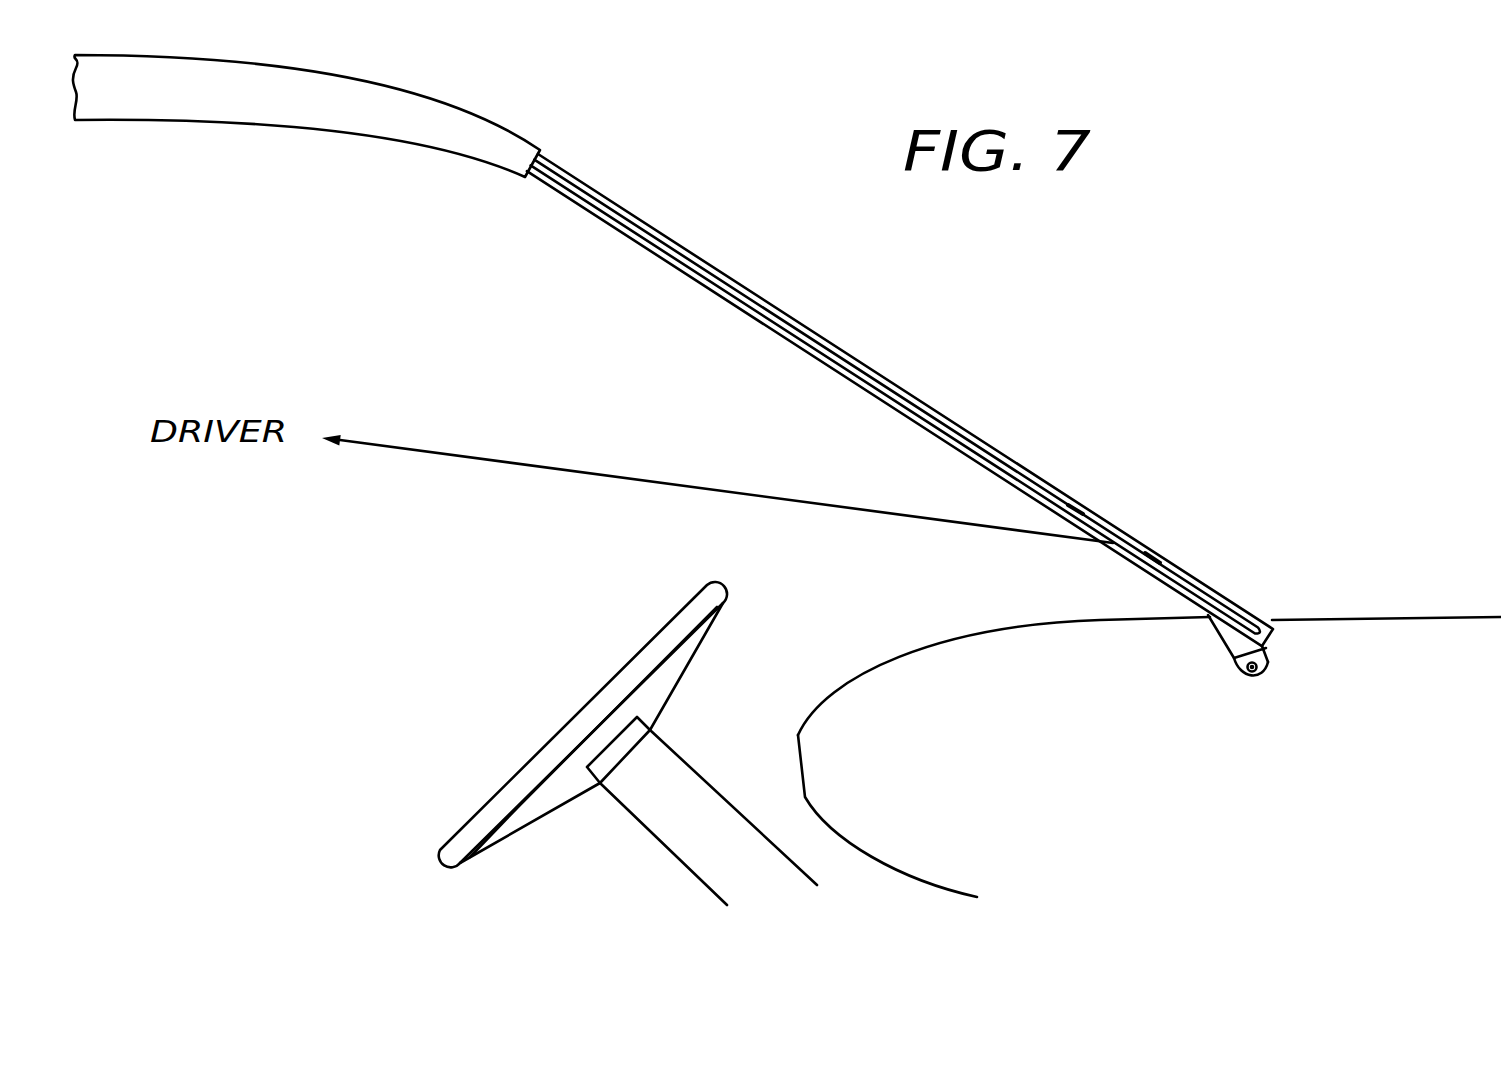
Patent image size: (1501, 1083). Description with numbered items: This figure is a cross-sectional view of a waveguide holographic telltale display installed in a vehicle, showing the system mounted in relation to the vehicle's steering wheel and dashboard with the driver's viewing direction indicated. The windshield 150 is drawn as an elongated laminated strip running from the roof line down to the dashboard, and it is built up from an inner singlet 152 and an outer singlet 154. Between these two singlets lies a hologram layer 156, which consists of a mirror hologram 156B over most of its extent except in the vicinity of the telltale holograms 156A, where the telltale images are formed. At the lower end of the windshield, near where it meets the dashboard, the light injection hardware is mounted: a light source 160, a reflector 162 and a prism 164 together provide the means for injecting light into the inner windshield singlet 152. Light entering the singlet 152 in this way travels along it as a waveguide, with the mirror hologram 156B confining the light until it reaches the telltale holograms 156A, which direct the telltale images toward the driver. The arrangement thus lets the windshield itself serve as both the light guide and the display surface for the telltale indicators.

The windshield 150 is at (855, 318).
The inner singlet 152 is at (864, 386).
The outer singlet 154 is at (903, 389).
The hologram layer 156 is at (983, 445).
The telltale holograms 156A is at (1103, 528).
The mirror hologram 156B is at (1193, 585).
The light source 160 is at (1266, 667).
The reflector 162 is at (1247, 677).
The prism 164 is at (1217, 632).